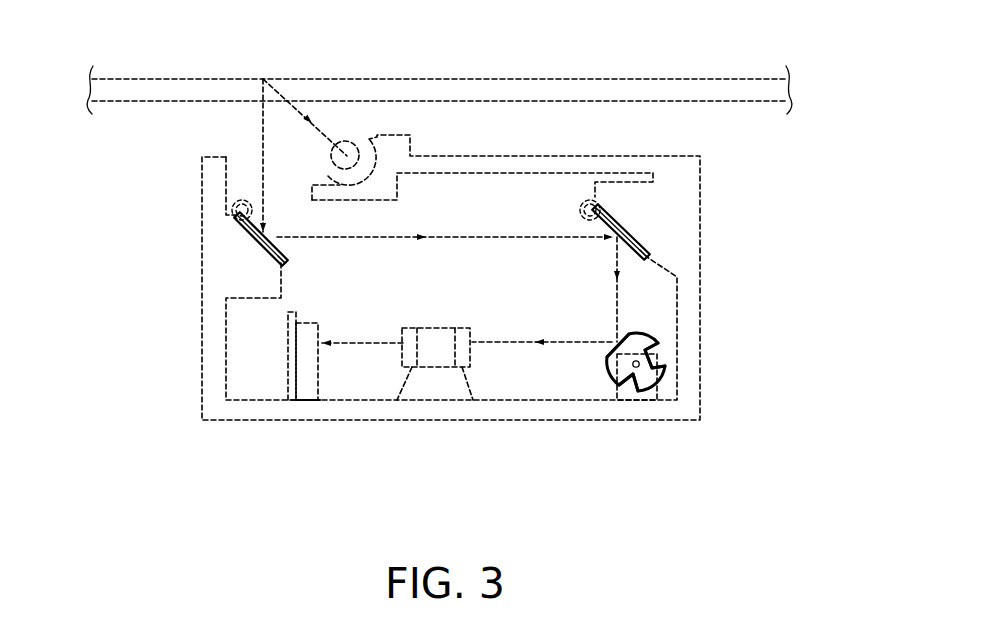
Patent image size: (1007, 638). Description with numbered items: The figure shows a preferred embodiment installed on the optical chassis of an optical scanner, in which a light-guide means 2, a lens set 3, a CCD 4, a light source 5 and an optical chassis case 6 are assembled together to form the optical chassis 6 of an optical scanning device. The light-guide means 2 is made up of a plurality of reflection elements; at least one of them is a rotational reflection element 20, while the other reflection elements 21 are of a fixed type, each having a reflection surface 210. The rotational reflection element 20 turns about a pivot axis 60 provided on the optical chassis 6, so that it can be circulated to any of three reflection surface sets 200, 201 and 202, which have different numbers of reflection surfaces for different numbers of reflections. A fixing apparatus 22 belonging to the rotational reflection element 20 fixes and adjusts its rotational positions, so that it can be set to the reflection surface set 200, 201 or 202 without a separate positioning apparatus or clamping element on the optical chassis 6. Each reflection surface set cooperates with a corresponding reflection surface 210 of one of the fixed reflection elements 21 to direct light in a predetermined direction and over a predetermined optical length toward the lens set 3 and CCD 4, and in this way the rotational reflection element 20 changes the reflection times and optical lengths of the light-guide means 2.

The light-guide means 2 is at (803, 202).
The lens set 3 is at (432, 358).
The CCD 4 is at (305, 392).
The light source 5 is at (345, 142).
The optical chassis 6 is at (702, 161).
The rotational reflection element 20 is at (643, 338).
The reflection element 21 is at (603, 222).
The fixing apparatus 22 is at (620, 393).
The pivot axis 60 is at (638, 366).
The reflection surface set 200 is at (612, 338).
The reflection surface set 201 is at (630, 388).
The reflection surface set 202 is at (667, 355).
The reflection surface 210 is at (278, 240).